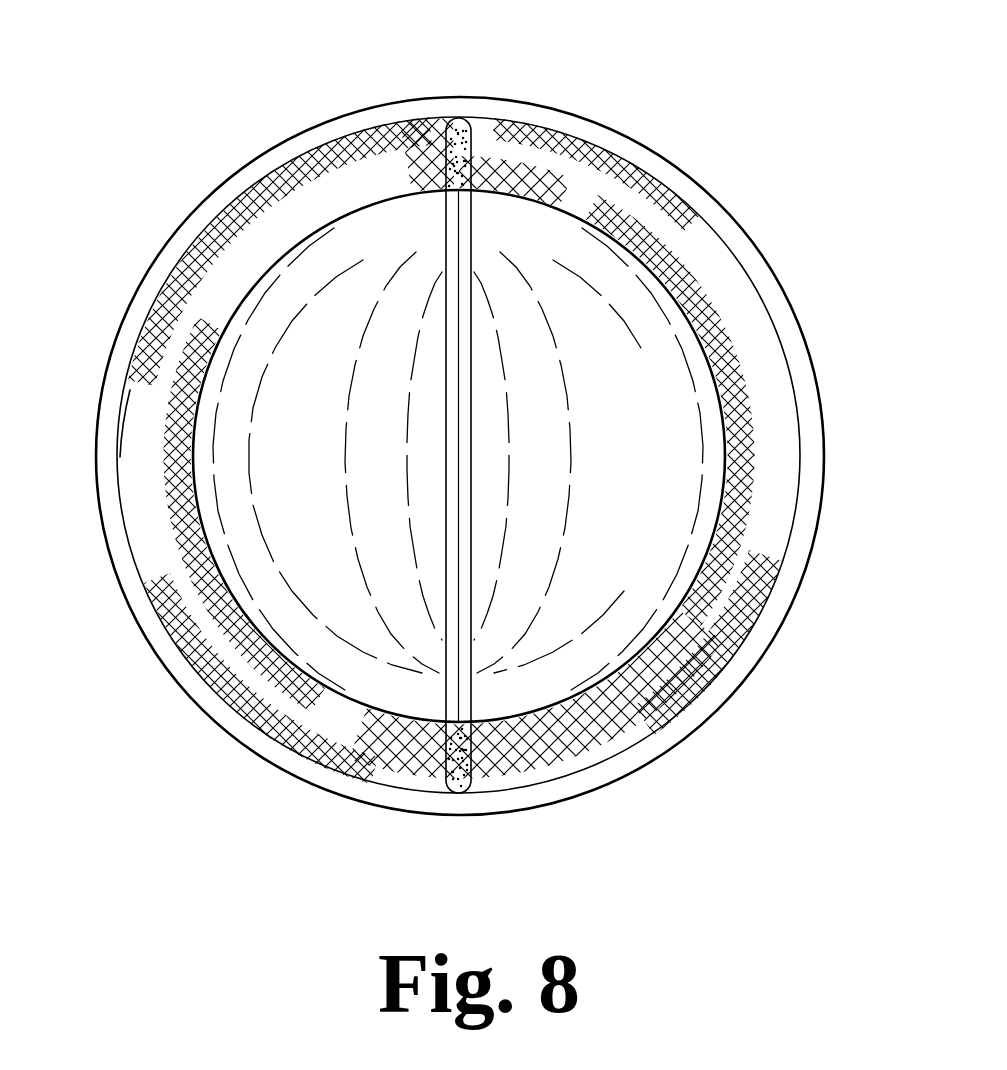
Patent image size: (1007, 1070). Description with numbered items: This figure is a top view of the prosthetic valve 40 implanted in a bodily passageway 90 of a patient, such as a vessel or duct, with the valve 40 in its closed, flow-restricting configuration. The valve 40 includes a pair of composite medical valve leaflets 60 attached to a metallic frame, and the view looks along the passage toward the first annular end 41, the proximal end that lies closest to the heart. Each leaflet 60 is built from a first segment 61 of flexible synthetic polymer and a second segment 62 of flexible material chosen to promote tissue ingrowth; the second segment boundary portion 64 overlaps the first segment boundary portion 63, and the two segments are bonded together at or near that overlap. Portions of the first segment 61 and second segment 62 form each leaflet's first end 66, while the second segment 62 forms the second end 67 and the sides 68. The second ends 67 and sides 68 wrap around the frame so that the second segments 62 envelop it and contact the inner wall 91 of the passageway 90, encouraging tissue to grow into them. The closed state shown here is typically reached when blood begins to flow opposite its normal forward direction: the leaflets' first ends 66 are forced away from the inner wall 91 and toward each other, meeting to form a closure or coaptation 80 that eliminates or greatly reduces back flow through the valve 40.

The prosthetic valve 40 is at (680, 243).
The first annular end 41 is at (800, 426).
The medical valve leaflet 60 is at (665, 553).
The first segment 61 is at (628, 662).
The second segment 62 is at (620, 735).
The first segment boundary portion 63 is at (213, 607).
The second segment boundary portion 64 is at (208, 538).
The first end 66 is at (443, 240).
The second end 67 is at (122, 457).
The sides 68 is at (457, 118).
The coaptation 80 is at (440, 690).
The bodily passageway 90 is at (206, 213).
The inner wall 91 is at (165, 292).